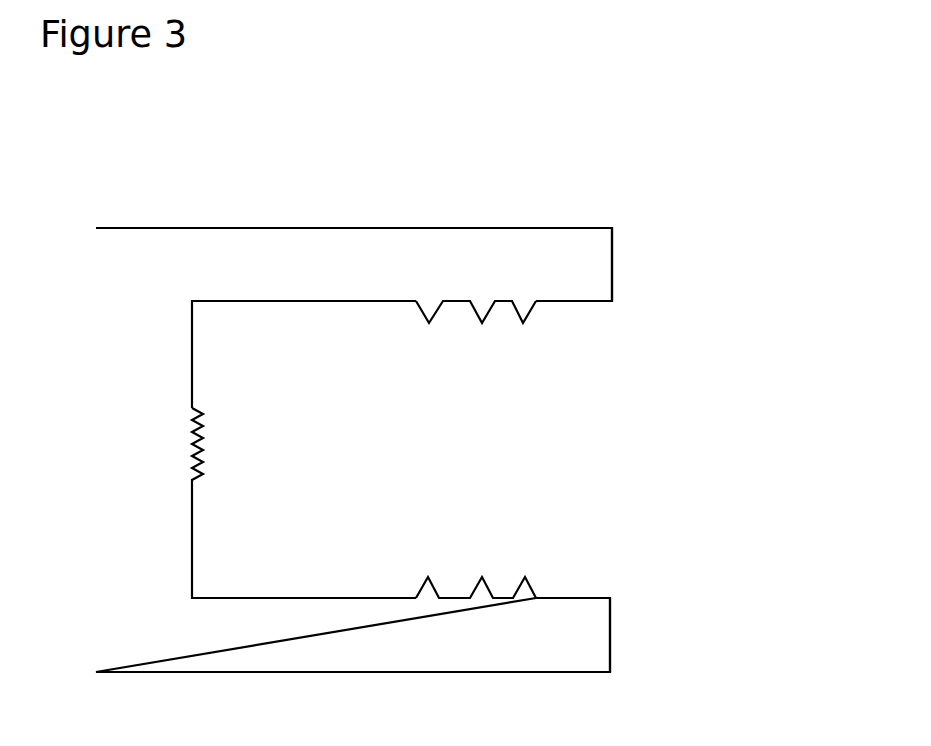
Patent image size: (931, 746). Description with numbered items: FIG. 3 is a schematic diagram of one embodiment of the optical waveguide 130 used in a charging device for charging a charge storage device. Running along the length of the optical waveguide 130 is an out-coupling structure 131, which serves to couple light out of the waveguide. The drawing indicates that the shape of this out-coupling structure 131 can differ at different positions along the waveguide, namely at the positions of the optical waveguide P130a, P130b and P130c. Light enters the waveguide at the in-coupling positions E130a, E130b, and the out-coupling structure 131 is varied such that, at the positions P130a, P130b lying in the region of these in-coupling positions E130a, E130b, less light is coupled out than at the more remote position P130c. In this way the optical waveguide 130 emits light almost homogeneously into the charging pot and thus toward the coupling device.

The optical waveguide 130 is at (278, 250).
The out-coupling structure 131 is at (502, 313).
The in-coupling position E130a is at (622, 630).
The in-coupling position E130b is at (578, 260).
The position of the optical waveguide P130a is at (467, 577).
The position of the optical waveguide P130b is at (457, 315).
The position of the optical waveguide P130c is at (223, 460).